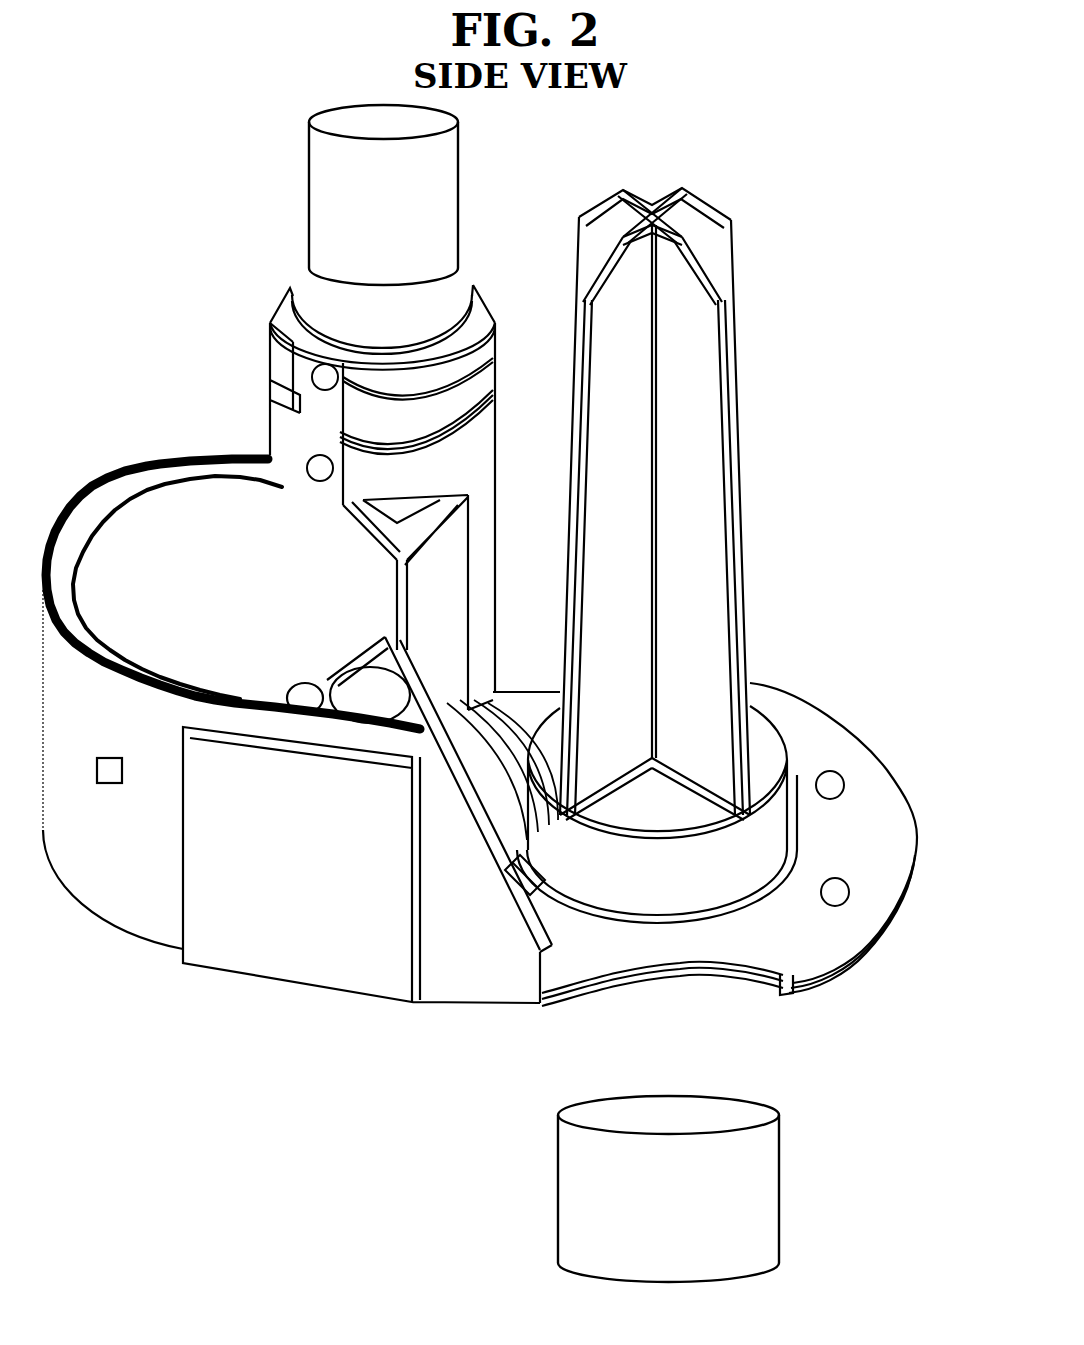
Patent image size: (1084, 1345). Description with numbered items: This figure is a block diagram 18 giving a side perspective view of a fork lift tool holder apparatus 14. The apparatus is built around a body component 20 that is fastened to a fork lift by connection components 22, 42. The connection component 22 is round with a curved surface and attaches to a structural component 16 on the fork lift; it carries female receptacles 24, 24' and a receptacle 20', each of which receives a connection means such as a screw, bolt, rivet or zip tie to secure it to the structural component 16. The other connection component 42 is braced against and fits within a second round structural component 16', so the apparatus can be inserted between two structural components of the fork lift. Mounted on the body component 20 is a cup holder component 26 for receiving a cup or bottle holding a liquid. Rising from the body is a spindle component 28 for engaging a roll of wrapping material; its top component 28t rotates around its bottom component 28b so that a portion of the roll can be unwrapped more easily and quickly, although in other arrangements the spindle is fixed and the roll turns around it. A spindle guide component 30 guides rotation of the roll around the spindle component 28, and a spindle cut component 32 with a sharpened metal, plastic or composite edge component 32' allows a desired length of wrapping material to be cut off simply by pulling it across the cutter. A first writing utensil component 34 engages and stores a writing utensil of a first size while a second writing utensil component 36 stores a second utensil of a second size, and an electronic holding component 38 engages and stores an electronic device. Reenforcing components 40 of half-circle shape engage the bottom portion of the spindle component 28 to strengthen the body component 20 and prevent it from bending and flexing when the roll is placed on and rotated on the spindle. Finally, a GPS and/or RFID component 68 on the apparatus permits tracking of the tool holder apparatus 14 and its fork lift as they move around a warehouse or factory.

The fork lift tool holder apparatus 14 is at (78, 505).
The structural component 16 is at (383, 195).
The second round structural component 16' is at (668, 1189).
The block diagram 18 is at (800, 110).
The body component 20 is at (705, 809).
The receptacle 20' is at (891, 838).
The connection component 22 is at (290, 300).
The female receptacle 24 is at (371, 342).
The female receptacle 24' is at (371, 465).
The cup holder component 26 is at (262, 520).
The spindle component 28 is at (647, 205).
The top component 28t is at (655, 324).
The bottom component 28b is at (657, 814).
The spindle guide component 30 is at (450, 567).
The spindle cut component 32 is at (468, 820).
The edge component 32' is at (502, 876).
The first writing utensil component 34 is at (368, 680).
The second writing utensil component 36 is at (298, 688).
The electronic holding component 38 is at (225, 893).
The reenforcing component 40 is at (505, 860).
The connection component 42 is at (685, 965).
The RFID component 68 is at (112, 778).